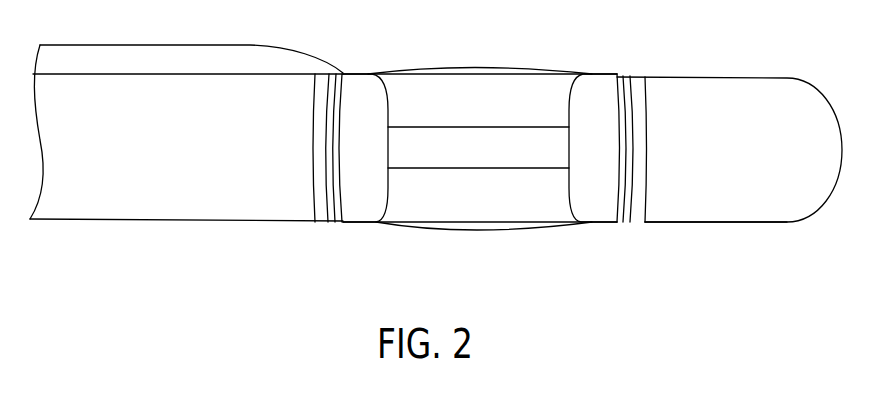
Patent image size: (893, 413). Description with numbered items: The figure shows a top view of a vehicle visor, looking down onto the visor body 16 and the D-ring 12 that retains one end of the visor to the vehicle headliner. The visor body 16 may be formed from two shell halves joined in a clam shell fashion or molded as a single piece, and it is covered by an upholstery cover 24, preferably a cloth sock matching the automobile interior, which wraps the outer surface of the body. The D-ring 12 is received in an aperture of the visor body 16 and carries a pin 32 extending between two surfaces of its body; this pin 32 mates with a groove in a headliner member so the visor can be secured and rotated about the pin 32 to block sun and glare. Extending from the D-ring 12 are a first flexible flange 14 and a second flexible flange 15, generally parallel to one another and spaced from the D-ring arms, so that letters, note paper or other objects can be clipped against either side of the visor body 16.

The D-ring 12 is at (594, 206).
The first flexible flange 14 is at (467, 230).
The second flexible flange 15 is at (470, 69).
The visor body 16 is at (728, 101).
The upholstery cover 24 is at (735, 225).
The pin 32 is at (497, 145).